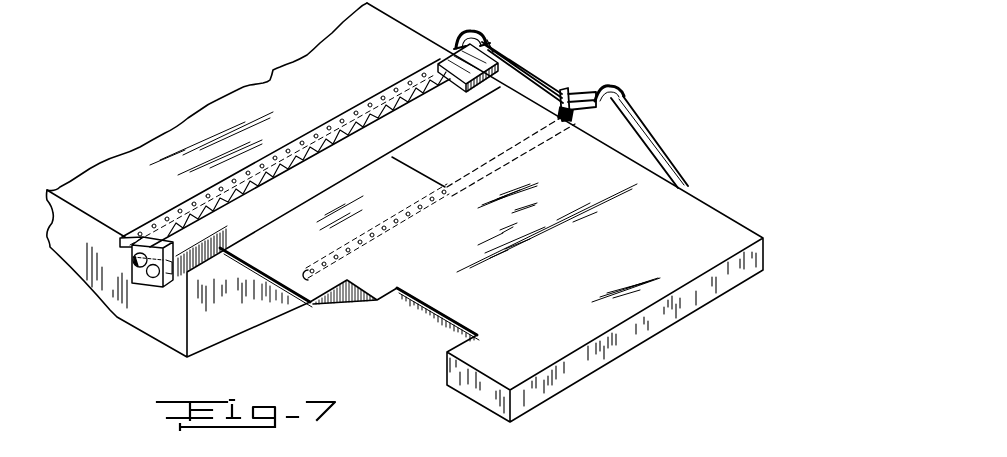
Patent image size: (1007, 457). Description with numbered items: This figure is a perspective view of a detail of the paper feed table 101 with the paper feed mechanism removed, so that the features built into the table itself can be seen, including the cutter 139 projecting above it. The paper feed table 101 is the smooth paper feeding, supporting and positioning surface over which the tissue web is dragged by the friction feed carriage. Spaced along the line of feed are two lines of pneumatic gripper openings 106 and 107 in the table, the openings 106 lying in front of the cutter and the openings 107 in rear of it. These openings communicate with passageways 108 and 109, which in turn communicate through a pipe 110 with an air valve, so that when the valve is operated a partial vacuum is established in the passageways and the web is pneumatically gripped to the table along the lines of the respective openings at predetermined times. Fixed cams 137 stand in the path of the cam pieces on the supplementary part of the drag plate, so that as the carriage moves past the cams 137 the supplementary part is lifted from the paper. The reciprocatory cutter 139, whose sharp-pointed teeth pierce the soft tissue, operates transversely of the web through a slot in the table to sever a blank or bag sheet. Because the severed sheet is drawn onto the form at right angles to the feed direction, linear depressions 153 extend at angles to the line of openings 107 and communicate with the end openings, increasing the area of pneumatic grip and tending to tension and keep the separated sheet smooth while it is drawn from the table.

The paper feed table 101 is at (257, 92).
The pneumatic gripper openings 106 is at (377, 96).
The pneumatic gripper openings 107 is at (423, 203).
The passageway 108 is at (434, 73).
The passageway 109 is at (513, 147).
The pipe 110 is at (640, 114).
The fixed cams 137 is at (143, 250).
The reciprocatory cutter 139 is at (307, 165).
The linear depressions 153 is at (418, 175).